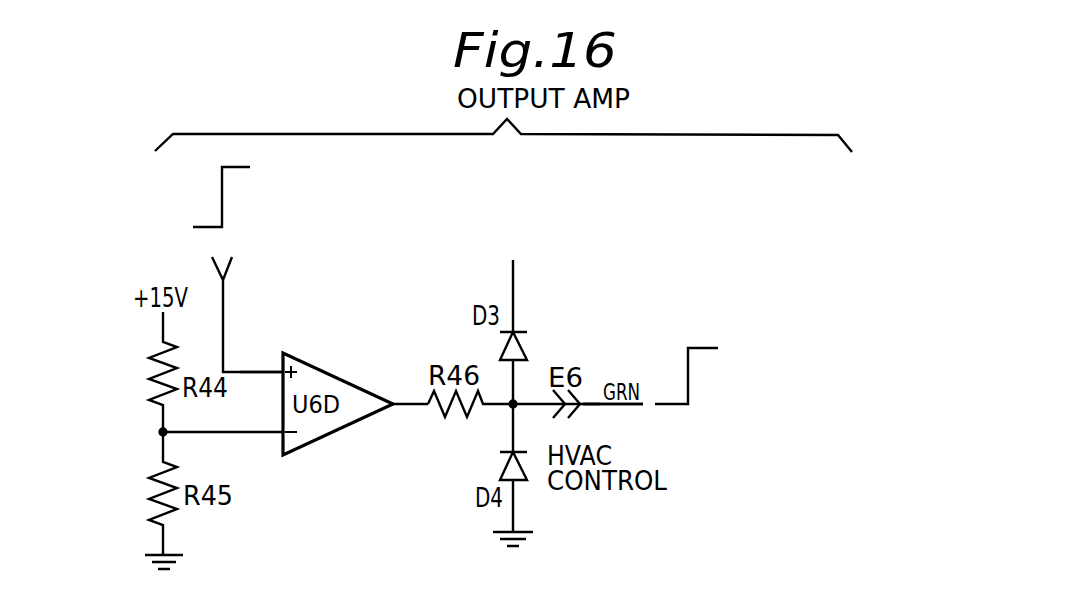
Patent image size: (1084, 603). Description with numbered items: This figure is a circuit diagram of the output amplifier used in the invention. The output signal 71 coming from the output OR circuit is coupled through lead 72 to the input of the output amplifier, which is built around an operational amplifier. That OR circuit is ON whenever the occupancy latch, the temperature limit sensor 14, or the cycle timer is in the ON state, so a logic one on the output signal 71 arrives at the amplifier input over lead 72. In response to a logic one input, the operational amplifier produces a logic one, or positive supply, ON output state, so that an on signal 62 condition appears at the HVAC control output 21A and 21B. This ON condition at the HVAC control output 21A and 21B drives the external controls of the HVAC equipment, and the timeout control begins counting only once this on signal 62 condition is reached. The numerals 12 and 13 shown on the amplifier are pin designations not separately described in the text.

The output signal 71 is at (223, 196).
The lead 72 is at (224, 318).
The non-inverting input pin of op amp U6D 12 is at (261, 360).
The inverting input pin of op amp U6D 13 is at (223, 418).
The temperature limit sensor 14 is at (410, 390).
The on signal 62 is at (688, 346).
The HVAC control output 21A is at (600, 404).
The HVAC control output 21B is at (648, 432).